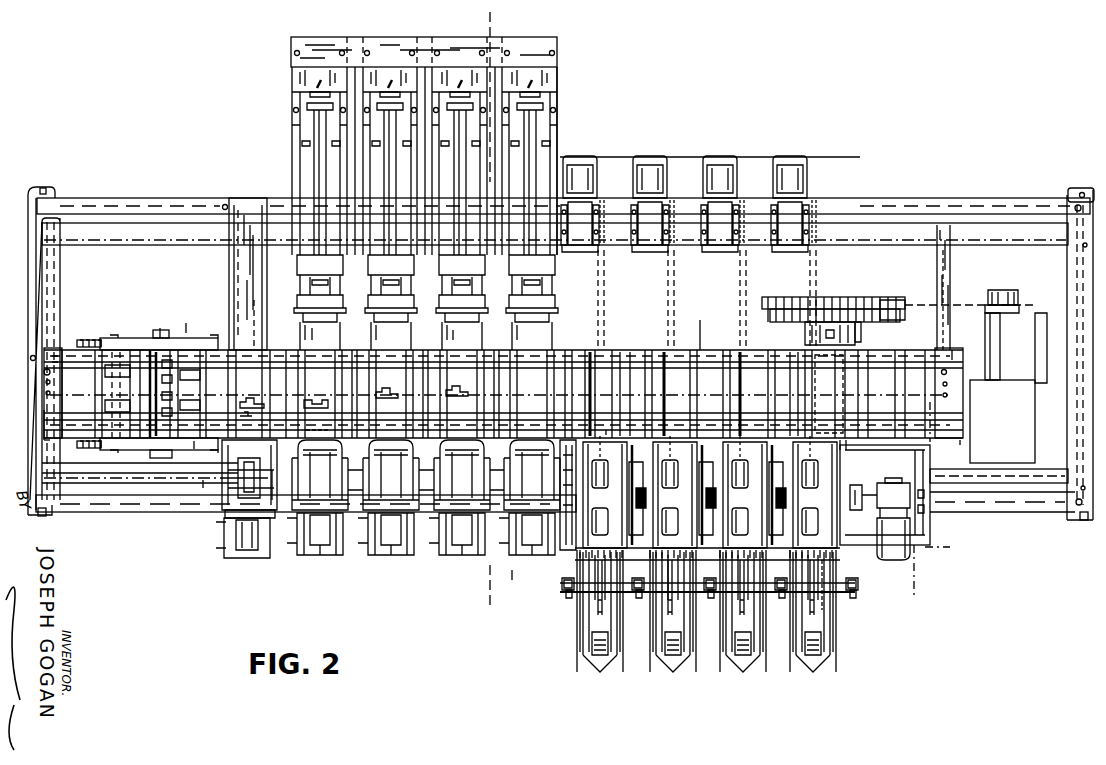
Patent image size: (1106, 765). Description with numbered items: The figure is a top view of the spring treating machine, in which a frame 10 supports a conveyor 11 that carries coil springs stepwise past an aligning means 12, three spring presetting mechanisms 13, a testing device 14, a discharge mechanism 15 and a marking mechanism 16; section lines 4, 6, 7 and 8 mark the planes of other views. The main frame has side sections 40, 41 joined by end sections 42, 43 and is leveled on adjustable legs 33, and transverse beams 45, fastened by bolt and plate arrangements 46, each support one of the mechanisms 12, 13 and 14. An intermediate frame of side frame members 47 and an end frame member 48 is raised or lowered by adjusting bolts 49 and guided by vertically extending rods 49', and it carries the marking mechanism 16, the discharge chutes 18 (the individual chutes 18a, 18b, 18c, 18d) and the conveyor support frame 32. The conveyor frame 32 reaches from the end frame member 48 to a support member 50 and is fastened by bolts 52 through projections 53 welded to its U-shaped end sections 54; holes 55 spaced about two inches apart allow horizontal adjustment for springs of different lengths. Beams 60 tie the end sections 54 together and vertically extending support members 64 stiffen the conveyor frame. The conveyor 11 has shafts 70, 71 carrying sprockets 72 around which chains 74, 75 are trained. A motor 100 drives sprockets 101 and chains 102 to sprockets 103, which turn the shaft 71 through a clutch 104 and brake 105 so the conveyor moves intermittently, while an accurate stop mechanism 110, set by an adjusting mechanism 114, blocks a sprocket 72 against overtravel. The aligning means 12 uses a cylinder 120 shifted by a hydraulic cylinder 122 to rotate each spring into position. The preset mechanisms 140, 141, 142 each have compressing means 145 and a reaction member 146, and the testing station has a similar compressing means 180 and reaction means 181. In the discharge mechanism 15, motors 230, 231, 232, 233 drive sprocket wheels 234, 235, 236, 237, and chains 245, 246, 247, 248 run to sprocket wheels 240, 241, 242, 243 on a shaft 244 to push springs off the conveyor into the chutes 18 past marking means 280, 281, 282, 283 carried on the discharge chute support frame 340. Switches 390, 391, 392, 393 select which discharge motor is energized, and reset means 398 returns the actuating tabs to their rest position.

The section line 4- 4 is at (190, 313).
The section line 6- 6 is at (486, 12).
The section line 7- 7 is at (606, 420).
The section line 8- 8 is at (528, 402).
The frame 10 is at (98, 525).
The conveyor 11 is at (200, 486).
The aligning means 12 is at (274, 564).
The spring presetting mechanisms 13 is at (386, 568).
The testing device 14 is at (512, 584).
The discharge mechanism 15 is at (827, 298).
The marking mechanism 16 is at (852, 488).
The discharge chutes 18 is at (848, 660).
The discharge chute 18a is at (612, 668).
The discharge chute 18b is at (682, 668).
The discharge chute 18c is at (752, 668).
The discharge chute 18d is at (822, 666).
The conveyor support frame 32 is at (44, 424).
The adjustable legs 33 is at (48, 188).
The main frame side section 40 is at (74, 515).
The main frame side section 41 is at (126, 197).
The main frame end section 42 is at (32, 247).
The main frame end section 43 is at (1080, 190).
The beams 45 is at (226, 266).
The bolt and plate arrangements 46 is at (230, 202).
The side frame members 47 is at (161, 243).
The end frame member 48 is at (56, 277).
The adjusting bolts 49 is at (541, 365).
The vertically extending rods 49' is at (543, 388).
The support member 50 is at (950, 274).
The bolts 52 is at (46, 392).
The projections 53 is at (44, 441).
The end sections 54 is at (64, 360).
The holes 55 is at (50, 393).
The beams 60 is at (638, 412).
The vertically extending support members 64 is at (345, 346).
The shaft 70 is at (163, 334).
The shaft 71 is at (802, 407).
The sprockets 72 is at (120, 349).
The chain 74 is at (254, 355).
The chain 75 is at (198, 406).
The motor 100 is at (1025, 328).
The sprockets 101 is at (1013, 302).
The chains 102 is at (969, 308).
The sprockets 103 is at (892, 300).
The clutch 104 is at (798, 322).
The brake 105 is at (858, 332).
The accurate stop mechanism 110 is at (726, 346).
The adjusting mechanism 114 is at (287, 485).
The cylinder 120 is at (230, 478).
The hydraulic cylinder 122 is at (220, 539).
The preset mechanism 140 is at (294, 104).
The preset mechanism 141 is at (371, 36).
The preset mechanism 142 is at (471, 35).
The compressing means 145 is at (530, 190).
The reaction member 146 is at (336, 510).
The compressing means 180 is at (560, 146).
The reaction means 181 is at (540, 553).
The motor 230 is at (582, 156).
The motor 231 is at (648, 156).
The motor 232 is at (712, 156).
The motor 233 is at (774, 156).
The sprocket wheel 234 is at (600, 204).
The sprocket wheel 235 is at (668, 204).
The sprocket wheel 236 is at (738, 204).
The sprocket wheel 237 is at (814, 204).
The sprocket wheel 240 is at (596, 608).
The sprocket wheel 241 is at (670, 612).
The sprocket wheel 242 is at (740, 606).
The sprocket wheel 243 is at (810, 606).
The shaft 244 is at (828, 598).
The chain 245 is at (612, 294).
The chain 246 is at (676, 290).
The chain 247 is at (746, 284).
The chain 248 is at (818, 284).
The marking means 280 is at (605, 492).
The marking means 281 is at (675, 492).
The marking means 282 is at (745, 492).
The marking means 283 is at (707, 498).
The discharge chute support frame 340 is at (926, 508).
The switch 390 is at (254, 406).
The switch 391 is at (317, 402).
The switch 392 is at (385, 400).
The switch 393 is at (455, 399).
The reset means 398 is at (852, 441).